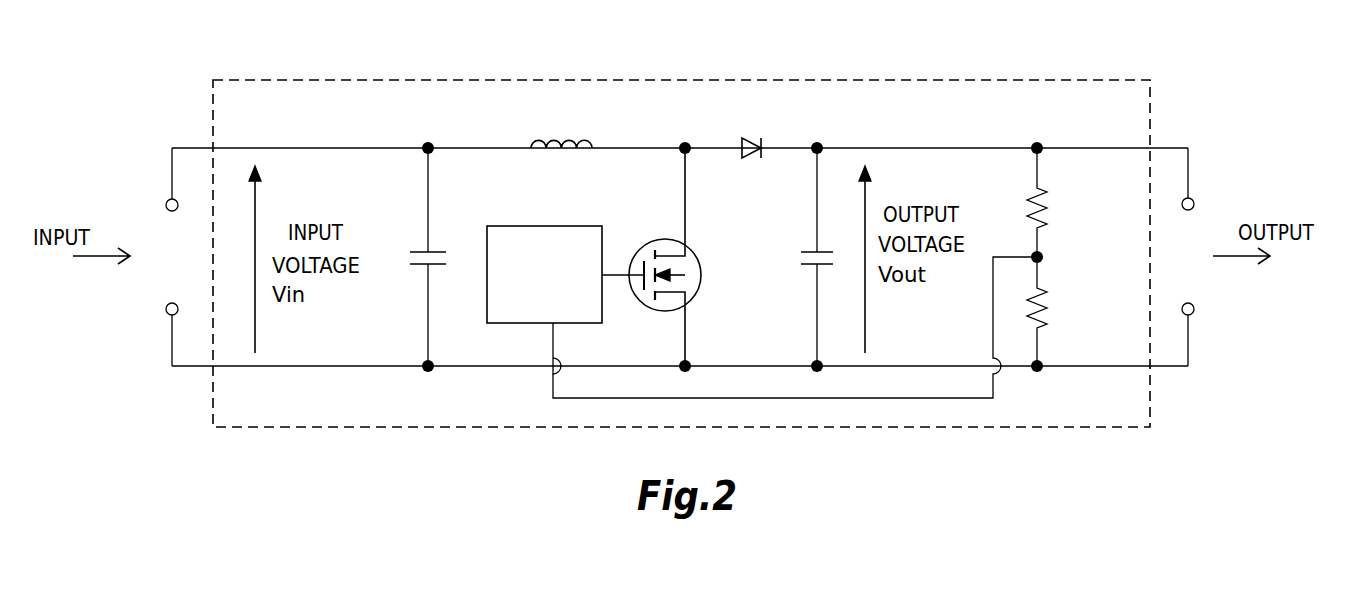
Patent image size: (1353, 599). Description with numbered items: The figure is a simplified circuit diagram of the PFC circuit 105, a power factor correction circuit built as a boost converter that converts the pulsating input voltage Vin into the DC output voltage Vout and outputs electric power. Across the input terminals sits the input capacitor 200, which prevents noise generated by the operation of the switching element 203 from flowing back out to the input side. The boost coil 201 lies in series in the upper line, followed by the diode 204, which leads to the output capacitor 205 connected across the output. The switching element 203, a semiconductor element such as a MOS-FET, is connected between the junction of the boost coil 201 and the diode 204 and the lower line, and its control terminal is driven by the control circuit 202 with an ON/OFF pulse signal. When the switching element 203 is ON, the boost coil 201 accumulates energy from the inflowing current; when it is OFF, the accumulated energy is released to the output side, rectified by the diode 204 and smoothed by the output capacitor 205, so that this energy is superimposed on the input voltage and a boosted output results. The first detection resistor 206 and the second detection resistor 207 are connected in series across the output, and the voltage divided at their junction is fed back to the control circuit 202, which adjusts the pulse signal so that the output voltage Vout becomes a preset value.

The PFC circuit 105 is at (278, 79).
The input capacitor 200 is at (423, 245).
The boost coil 201 is at (532, 138).
The control circuit 202 is at (545, 225).
The switching element 203 is at (672, 241).
The diode 204 is at (752, 133).
The output capacitor 205 is at (813, 248).
The first detection resistor 206 is at (1058, 203).
The second detection resistor 207 is at (1058, 302).